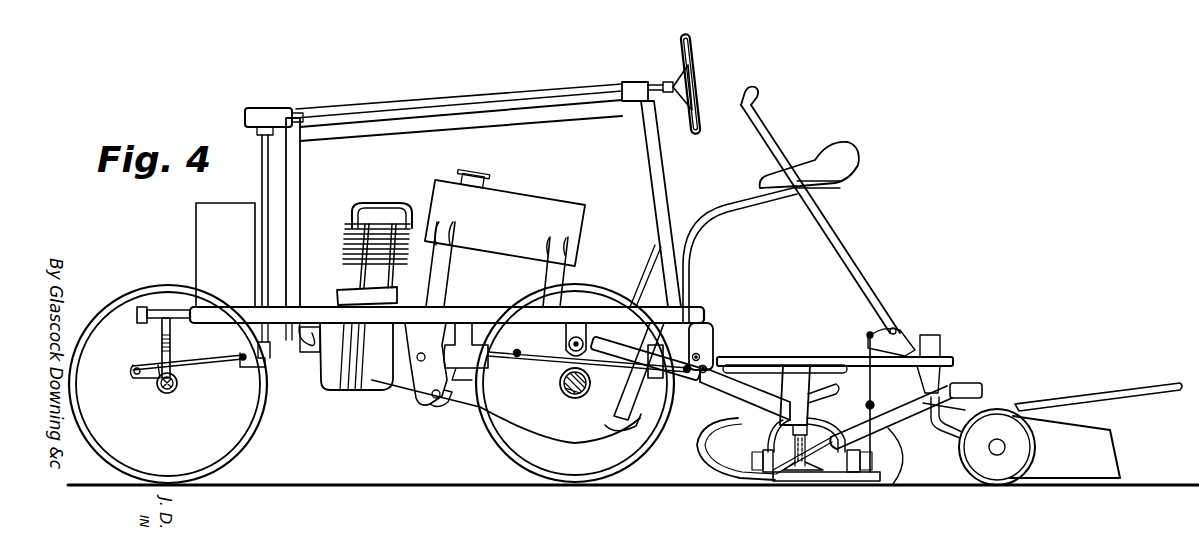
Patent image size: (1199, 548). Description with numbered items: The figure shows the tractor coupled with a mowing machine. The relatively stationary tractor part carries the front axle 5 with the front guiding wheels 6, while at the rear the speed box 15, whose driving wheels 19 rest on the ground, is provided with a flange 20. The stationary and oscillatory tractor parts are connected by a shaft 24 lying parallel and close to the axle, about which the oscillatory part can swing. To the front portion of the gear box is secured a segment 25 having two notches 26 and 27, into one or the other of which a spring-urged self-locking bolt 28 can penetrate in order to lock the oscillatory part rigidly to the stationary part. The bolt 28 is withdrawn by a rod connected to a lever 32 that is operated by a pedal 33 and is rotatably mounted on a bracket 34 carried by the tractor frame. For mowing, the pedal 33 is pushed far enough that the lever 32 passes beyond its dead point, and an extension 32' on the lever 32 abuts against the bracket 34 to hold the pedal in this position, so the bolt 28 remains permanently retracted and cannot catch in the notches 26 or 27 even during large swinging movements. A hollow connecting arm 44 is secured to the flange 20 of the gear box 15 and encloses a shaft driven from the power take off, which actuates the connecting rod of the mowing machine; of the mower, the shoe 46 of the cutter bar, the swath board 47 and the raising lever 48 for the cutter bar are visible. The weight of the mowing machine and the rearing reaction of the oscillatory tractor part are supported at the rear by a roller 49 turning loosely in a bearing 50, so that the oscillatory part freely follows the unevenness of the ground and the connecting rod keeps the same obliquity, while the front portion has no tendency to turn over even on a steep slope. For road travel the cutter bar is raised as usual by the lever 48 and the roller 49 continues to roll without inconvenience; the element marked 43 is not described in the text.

The front axle 5 is at (160, 341).
The front guiding wheels 6 is at (232, 461).
The speed box 15 is at (566, 420).
The driving wheels 19 is at (663, 437).
The flange 20 is at (645, 374).
The shaft (trunnion) 24 is at (570, 353).
The segment 25 is at (418, 380).
The upper notch 26 is at (416, 350).
The lower notch 27 is at (434, 402).
The self-locking bolt 28 is at (457, 371).
The lever 32 is at (726, 354).
The extension 32' is at (725, 339).
The pedal 33 is at (636, 426).
The bracket 34 is at (704, 310).
The planter shoe 43 is at (776, 475).
The hollow connecting arm 44 is at (714, 388).
The shoe of the cutter bar 46 is at (847, 480).
The swath board 47 is at (924, 452).
The raising lever 48 is at (854, 270).
The roller 49 is at (1006, 470).
The bearing 50 is at (932, 384).